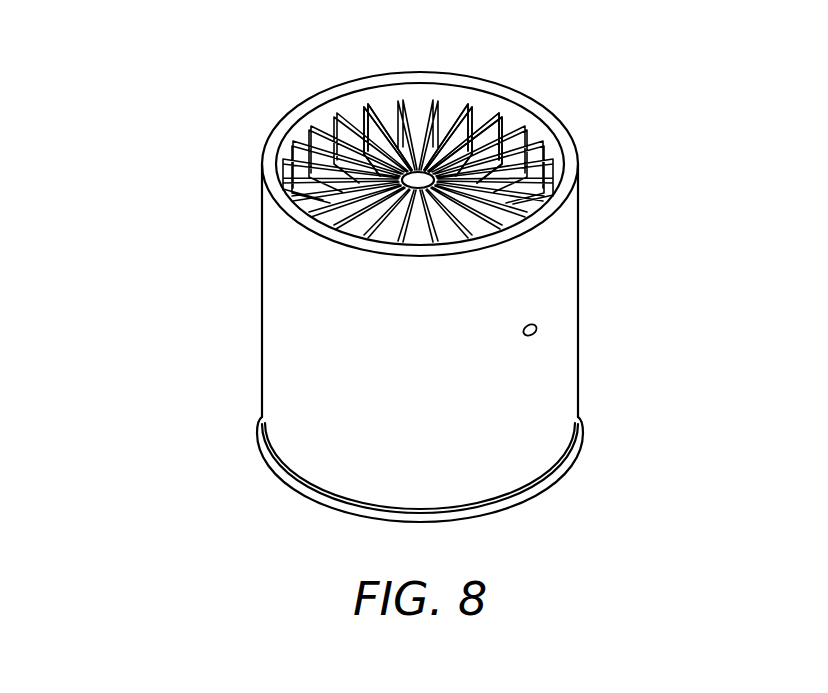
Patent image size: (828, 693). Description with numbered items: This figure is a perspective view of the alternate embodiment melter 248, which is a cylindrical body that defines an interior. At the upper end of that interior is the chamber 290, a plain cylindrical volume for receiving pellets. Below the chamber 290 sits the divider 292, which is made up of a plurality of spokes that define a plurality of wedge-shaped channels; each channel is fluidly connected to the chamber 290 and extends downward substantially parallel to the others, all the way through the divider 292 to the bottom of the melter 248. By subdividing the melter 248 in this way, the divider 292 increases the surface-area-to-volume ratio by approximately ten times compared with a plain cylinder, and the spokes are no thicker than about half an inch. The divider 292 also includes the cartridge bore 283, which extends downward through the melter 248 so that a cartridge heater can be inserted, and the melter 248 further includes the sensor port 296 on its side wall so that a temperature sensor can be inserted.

The alternate embodiment melter 248 is at (262, 346).
The cartridge bore 283 is at (436, 187).
The chamber 290 is at (377, 96).
The divider 292 is at (343, 100).
The sensor port 296 is at (538, 332).